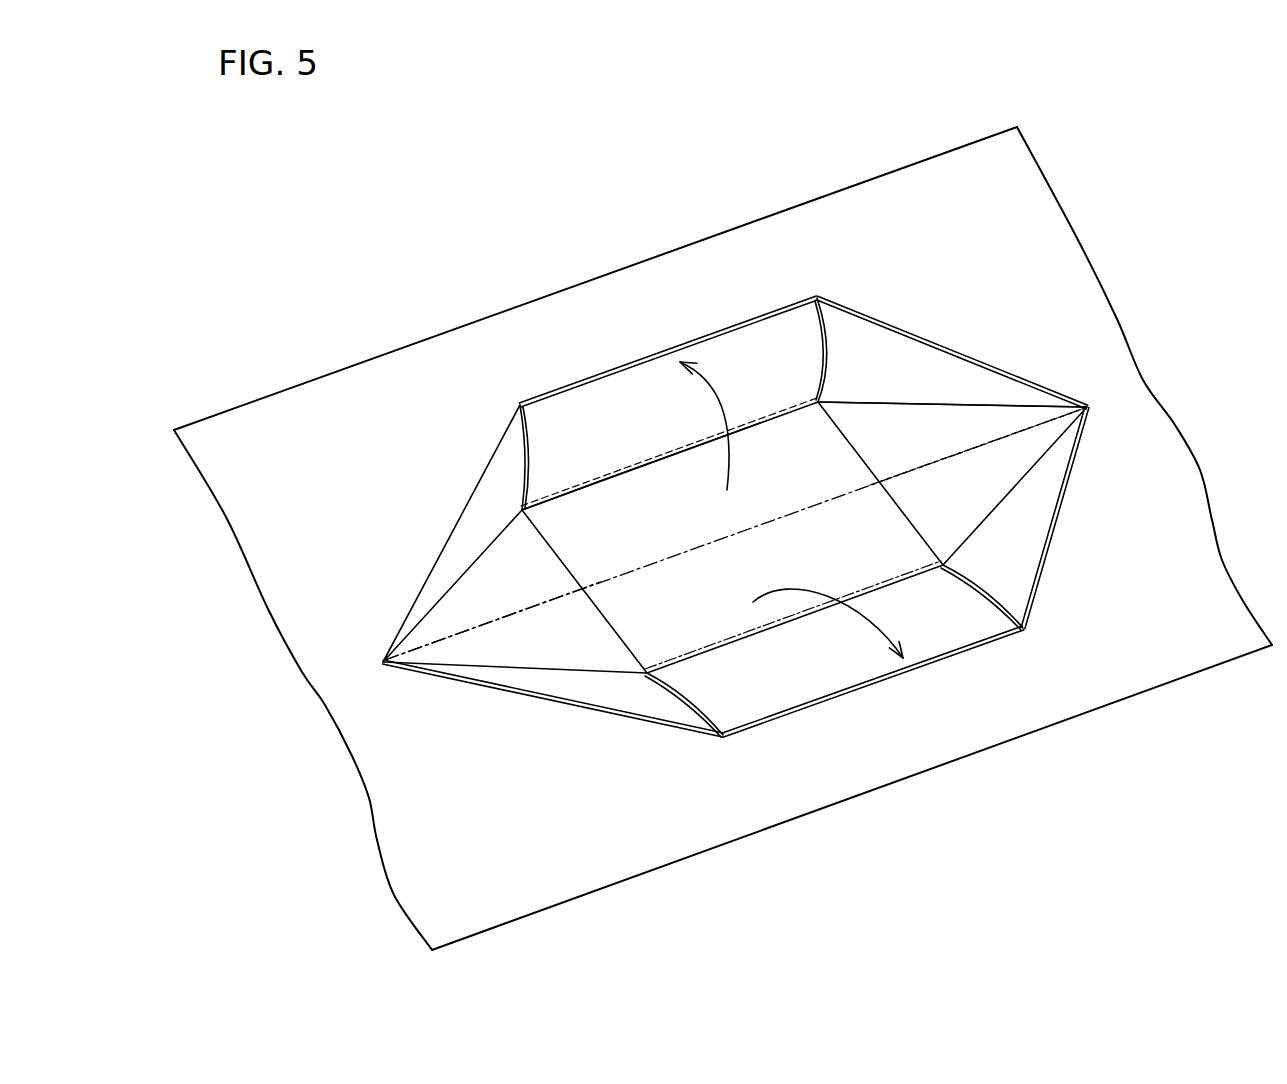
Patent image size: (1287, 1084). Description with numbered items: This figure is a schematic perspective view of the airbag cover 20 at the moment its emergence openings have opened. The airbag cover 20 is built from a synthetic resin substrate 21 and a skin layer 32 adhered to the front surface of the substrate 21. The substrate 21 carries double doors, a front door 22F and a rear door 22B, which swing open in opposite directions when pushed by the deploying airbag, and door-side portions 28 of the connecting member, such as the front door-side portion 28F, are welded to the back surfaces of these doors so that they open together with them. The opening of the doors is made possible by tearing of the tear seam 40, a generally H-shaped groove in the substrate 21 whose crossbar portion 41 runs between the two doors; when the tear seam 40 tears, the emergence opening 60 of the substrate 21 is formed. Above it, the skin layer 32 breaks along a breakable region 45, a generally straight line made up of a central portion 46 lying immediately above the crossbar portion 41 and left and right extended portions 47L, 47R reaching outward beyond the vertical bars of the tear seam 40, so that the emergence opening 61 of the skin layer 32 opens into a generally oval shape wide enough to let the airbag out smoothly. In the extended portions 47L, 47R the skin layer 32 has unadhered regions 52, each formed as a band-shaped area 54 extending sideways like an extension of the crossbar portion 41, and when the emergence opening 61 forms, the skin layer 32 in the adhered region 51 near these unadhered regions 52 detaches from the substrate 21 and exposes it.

The airbag cover 20 is at (370, 410).
The substrate 21 is at (283, 572).
The front door 22F is at (841, 460).
The rear door 22B is at (860, 557).
The front door-side portion 28F is at (762, 355).
The door-side portion 28 is at (817, 672).
The skin layer 32 is at (268, 529).
The tear seam 40 is at (735, 656).
The crossbar portion 41 is at (735, 656).
The breakable region 45 is at (735, 656).
The central portion 46 is at (700, 560).
The left extended portion 47L is at (498, 620).
The right extended portion 47R is at (960, 455).
The adhered region 51 is at (938, 415).
The unadhered region 52 is at (741, 553).
The band-shaped area 54 is at (384, 663).
The emergence opening of the substrate 60 is at (645, 500).
The emergence opening of the skin layer 61 is at (587, 525).